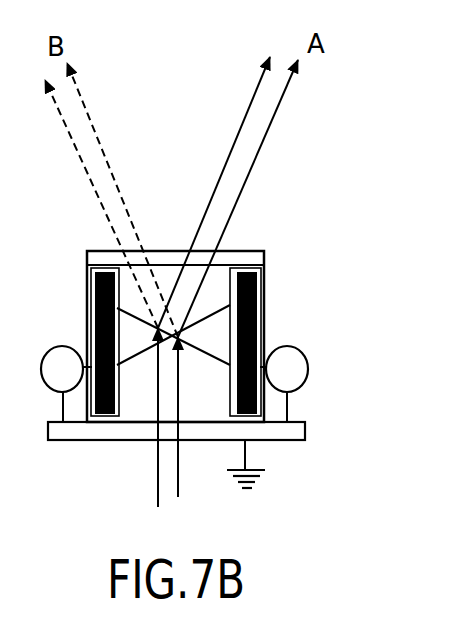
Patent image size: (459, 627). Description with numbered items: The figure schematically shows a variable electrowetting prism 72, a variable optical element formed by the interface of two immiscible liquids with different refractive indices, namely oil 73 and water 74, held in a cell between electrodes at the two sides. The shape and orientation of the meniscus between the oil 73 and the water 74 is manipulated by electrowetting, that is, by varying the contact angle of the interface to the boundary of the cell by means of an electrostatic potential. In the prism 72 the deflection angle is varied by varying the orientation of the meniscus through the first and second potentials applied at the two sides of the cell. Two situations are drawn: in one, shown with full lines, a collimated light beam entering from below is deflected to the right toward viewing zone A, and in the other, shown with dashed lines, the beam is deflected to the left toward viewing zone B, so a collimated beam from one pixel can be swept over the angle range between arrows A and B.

The variable electrowetting prism 72 is at (298, 322).
The oil 73 is at (208, 392).
The water 74 is at (213, 295).